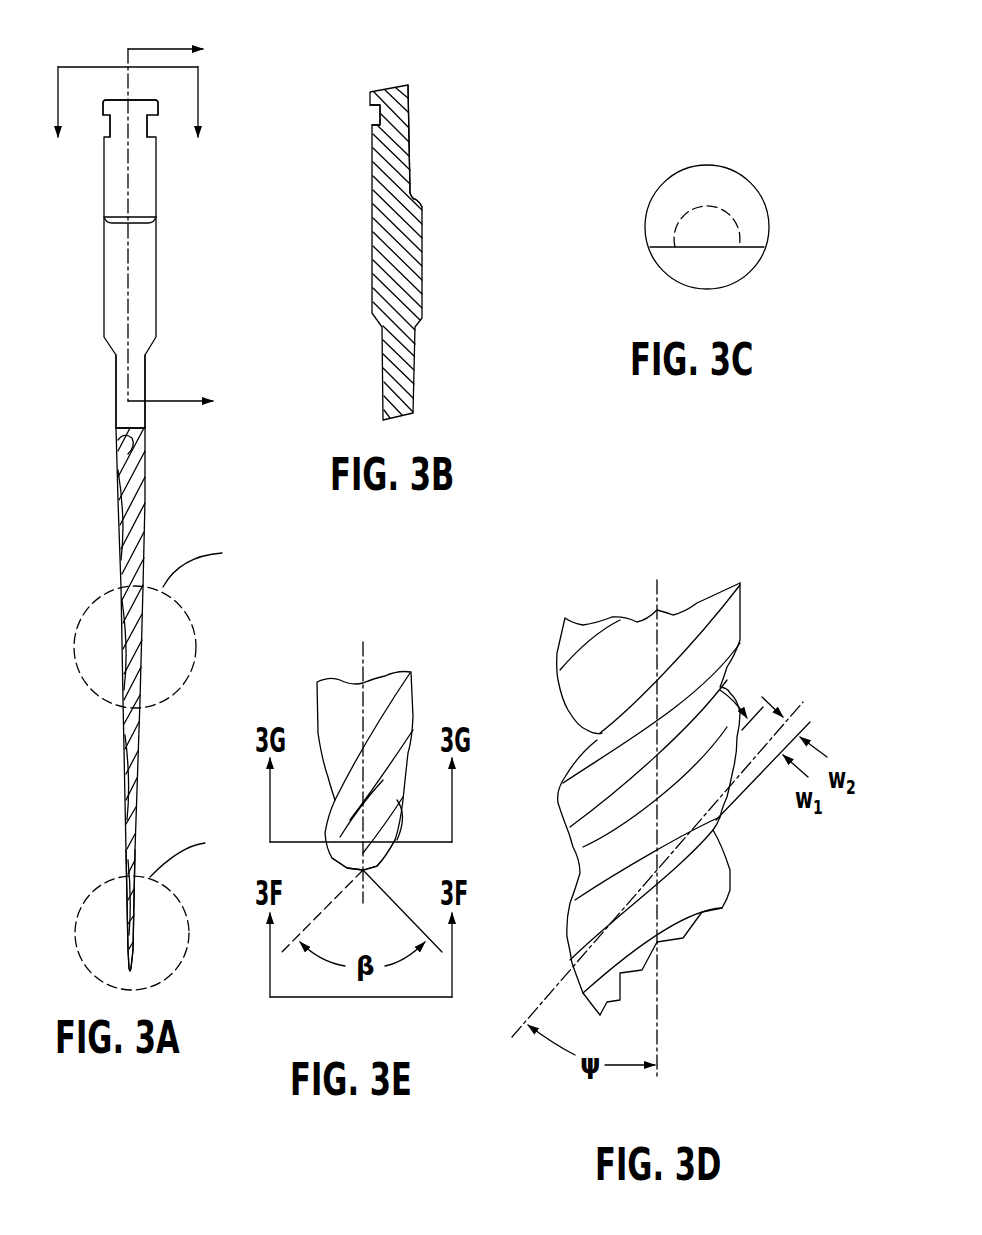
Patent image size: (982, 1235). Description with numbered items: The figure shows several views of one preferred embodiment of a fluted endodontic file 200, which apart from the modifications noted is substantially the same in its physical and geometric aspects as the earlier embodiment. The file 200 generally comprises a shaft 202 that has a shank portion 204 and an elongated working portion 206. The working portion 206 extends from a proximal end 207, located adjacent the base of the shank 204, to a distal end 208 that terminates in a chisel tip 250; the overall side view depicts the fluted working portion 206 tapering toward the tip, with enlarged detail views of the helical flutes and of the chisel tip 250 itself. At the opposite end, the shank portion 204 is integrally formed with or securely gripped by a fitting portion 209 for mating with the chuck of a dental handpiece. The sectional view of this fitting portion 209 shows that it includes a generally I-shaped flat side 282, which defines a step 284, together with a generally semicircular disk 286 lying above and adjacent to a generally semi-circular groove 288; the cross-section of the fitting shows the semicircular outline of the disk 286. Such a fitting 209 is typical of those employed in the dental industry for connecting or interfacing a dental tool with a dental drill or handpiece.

In FIG. 3A, the endodontic file 200 is at (182, 495).
In FIG. 3B, the shaft 202 is at (419, 243).
In FIG. 3A, the shank portion 204 is at (145, 385).
In FIG. 3A, the working portion 206 is at (145, 540).
In FIG. 3A, the proximal end 207 is at (176, 699).
In FIG. 3A, the distal end 208 is at (122, 900).
In FIG. 3E, the distal end 208 is at (318, 730).
In FIG. 3A, the fitting portion 209 is at (157, 205).
In FIG. 3E, the chisel tip 250 is at (378, 866).
In FIG. 3B, the flat side 282 is at (411, 137).
In FIG. 3B, the step 284 is at (421, 195).
In FIG. 3A, the semicircular disk 286 is at (118, 98).
In FIG. 3C, the semicircular disk 286 is at (678, 172).
In FIG. 3A, the semi-circular groove 288 is at (158, 120).
In FIG. 3B, the semi-circular groove 288 is at (374, 108).